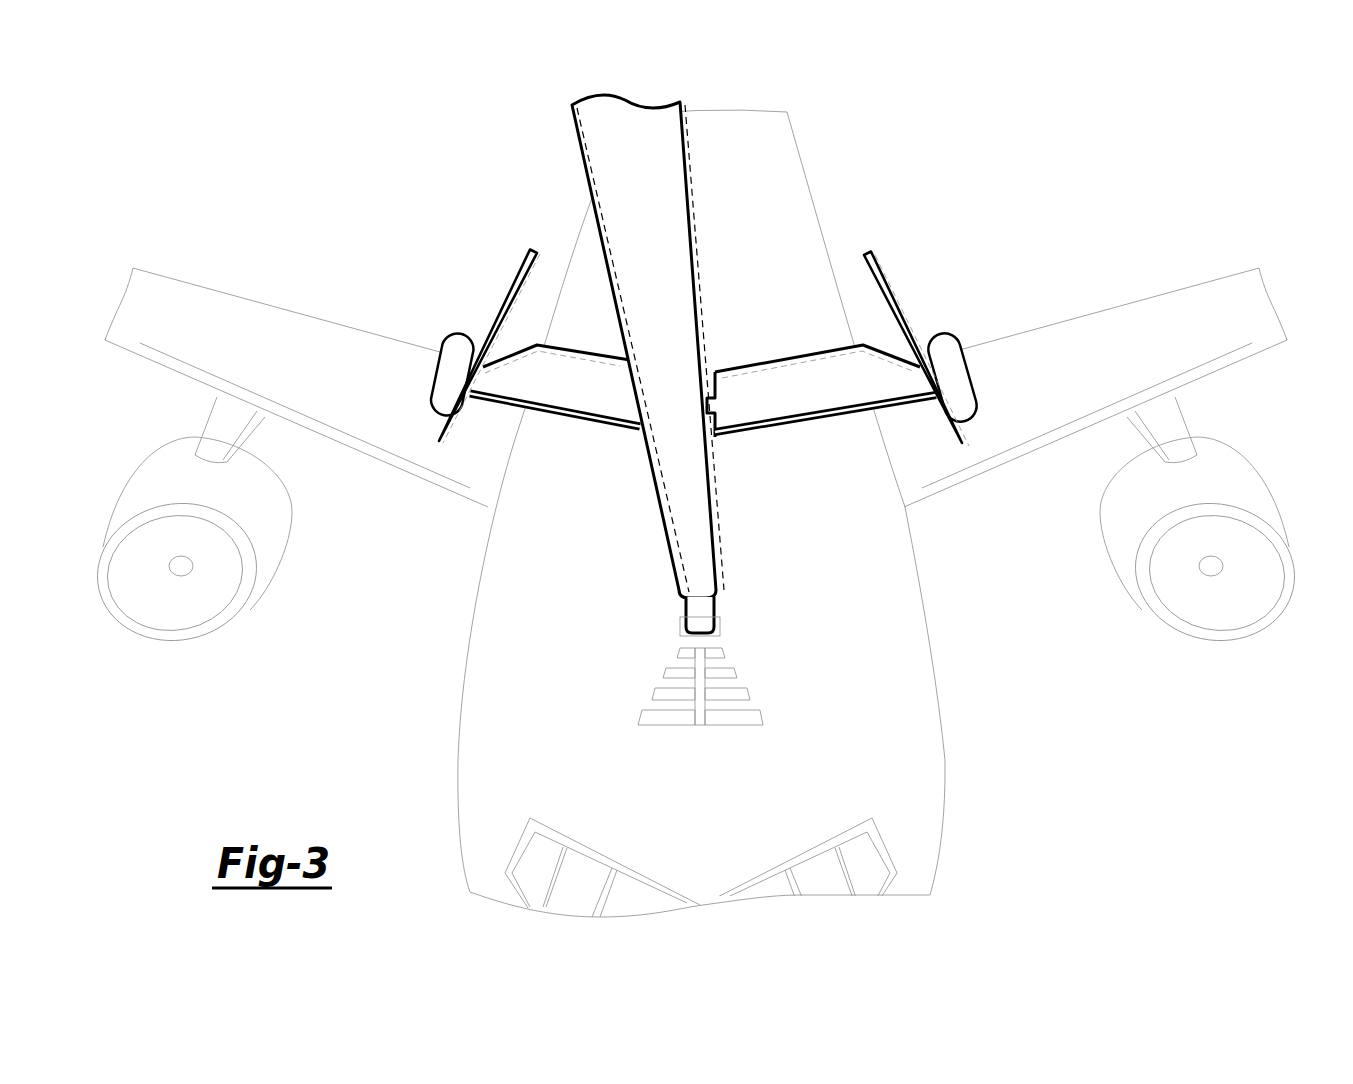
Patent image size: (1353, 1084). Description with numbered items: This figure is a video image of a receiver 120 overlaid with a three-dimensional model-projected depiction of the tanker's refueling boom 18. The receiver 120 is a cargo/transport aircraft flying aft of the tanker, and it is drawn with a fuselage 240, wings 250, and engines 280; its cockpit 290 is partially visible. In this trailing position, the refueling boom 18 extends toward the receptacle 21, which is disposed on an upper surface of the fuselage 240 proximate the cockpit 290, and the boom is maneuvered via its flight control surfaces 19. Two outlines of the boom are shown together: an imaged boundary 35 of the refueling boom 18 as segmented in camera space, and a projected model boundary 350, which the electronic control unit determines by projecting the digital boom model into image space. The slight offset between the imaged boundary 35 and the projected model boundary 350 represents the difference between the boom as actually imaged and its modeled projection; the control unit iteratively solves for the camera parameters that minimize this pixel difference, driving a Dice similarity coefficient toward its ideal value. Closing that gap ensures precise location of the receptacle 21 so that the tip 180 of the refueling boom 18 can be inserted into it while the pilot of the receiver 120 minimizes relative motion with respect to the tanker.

The refueling boom 18 is at (534, 136).
The imaged boundary 35 is at (687, 138).
The fuselage 240 is at (777, 147).
The flight control surfaces 19 is at (918, 208).
The receiver 120 is at (1089, 125).
The wings 250 is at (262, 325).
The projected model boundary 350 is at (597, 235).
The engines 280 is at (268, 535).
The receptacle 21 is at (745, 619).
The tip 180 is at (646, 618).
The cockpit 290 is at (737, 853).